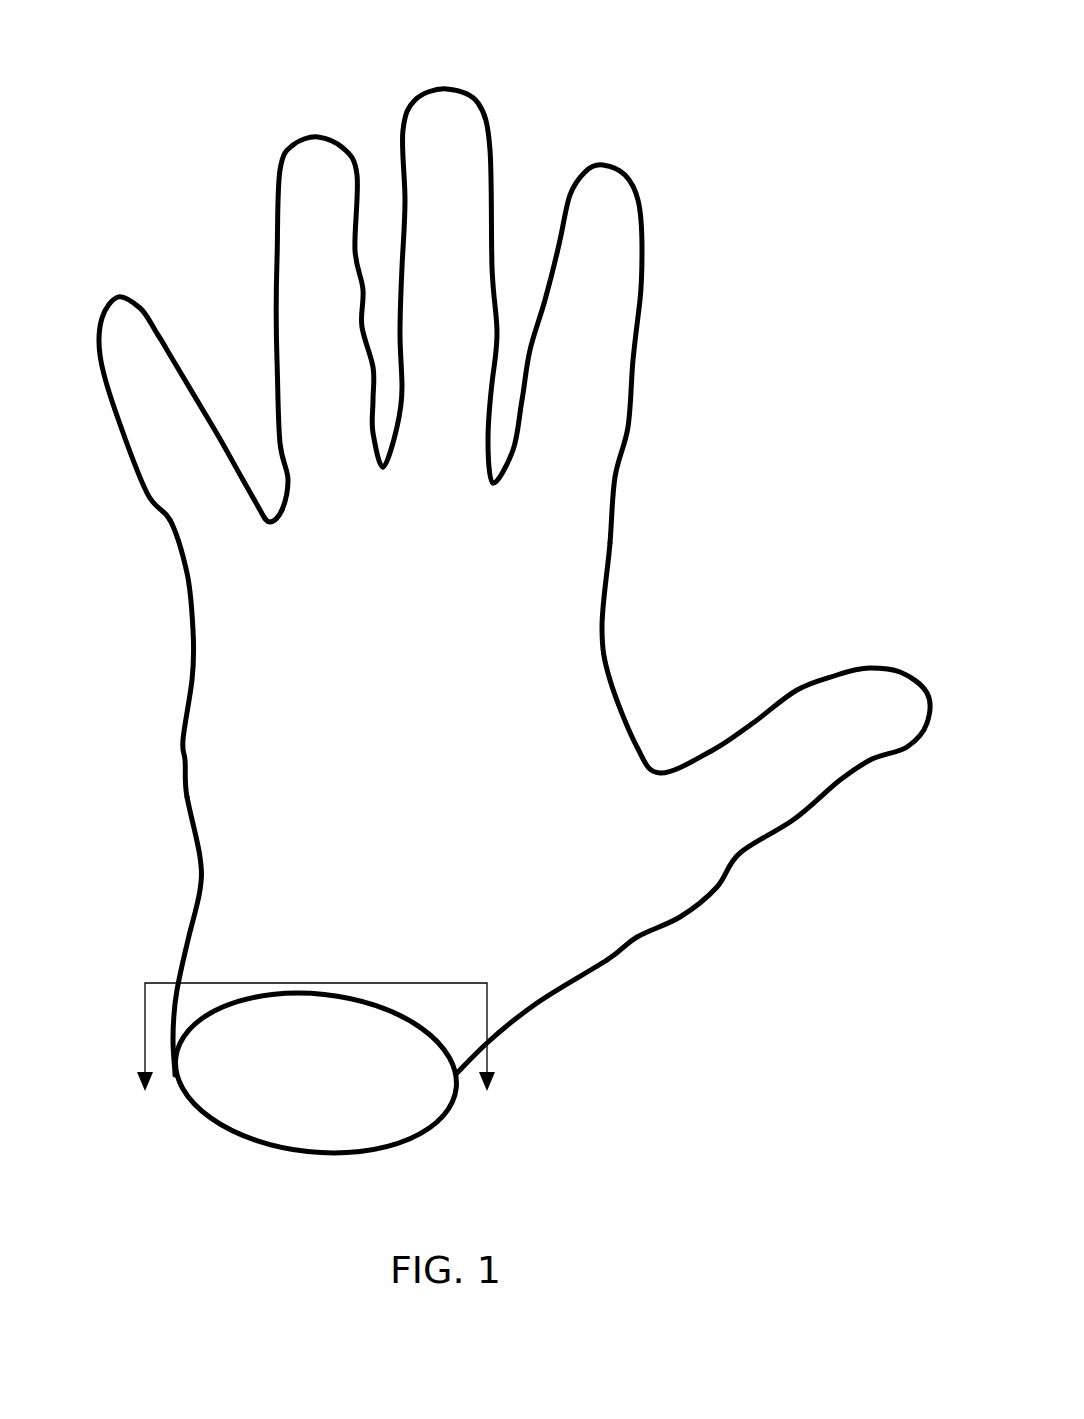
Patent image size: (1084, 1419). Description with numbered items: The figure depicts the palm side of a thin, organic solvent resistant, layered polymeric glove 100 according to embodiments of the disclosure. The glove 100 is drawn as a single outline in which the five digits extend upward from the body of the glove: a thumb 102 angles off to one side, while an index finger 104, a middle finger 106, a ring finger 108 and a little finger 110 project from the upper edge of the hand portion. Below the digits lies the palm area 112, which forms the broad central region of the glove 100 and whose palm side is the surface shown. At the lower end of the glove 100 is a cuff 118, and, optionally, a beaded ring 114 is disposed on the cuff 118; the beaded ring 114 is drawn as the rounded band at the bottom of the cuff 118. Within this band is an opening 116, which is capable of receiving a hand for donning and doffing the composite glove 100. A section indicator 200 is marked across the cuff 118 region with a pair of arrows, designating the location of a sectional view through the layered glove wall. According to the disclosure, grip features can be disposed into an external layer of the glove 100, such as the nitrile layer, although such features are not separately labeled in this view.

The thin, layered polymeric glove 100 is at (766, 63).
The thumb 102 is at (900, 670).
The index finger 104 is at (598, 163).
The middle finger 106 is at (443, 88).
The ring finger 108 is at (313, 137).
The little finger 110 is at (112, 297).
The palm area 112 is at (350, 787).
The beaded ring 114 is at (248, 1140).
The opening 116 is at (362, 1109).
The cuff 118 is at (227, 962).
The section line 200 is at (317, 1054).